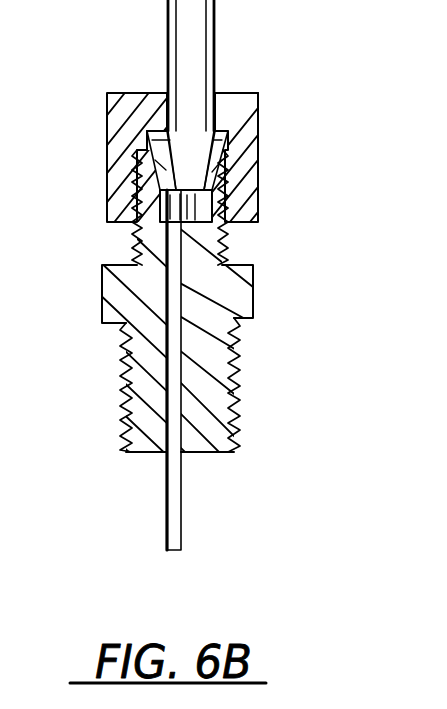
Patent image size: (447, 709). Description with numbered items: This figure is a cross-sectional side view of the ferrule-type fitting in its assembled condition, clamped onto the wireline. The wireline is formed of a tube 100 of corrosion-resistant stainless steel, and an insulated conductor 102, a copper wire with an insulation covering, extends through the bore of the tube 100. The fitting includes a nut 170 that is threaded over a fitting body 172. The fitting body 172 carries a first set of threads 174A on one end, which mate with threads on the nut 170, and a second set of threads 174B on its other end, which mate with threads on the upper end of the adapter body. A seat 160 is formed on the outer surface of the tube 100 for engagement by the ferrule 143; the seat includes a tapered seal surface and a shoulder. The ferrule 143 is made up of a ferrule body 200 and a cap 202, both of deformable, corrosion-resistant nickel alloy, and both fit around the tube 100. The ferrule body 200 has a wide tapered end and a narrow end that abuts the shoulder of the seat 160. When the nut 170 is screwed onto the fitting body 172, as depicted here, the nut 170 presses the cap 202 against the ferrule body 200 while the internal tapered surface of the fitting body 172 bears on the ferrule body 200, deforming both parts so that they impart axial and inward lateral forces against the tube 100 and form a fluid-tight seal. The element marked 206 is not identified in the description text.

The tube 100 is at (213, 47).
The insulated conductor 102 is at (183, 518).
The ferrule 143 is at (138, 166).
The seat 160 is at (222, 195).
The nut 170 is at (258, 118).
The fitting body 172 is at (256, 296).
The first set of threads 174A is at (232, 185).
The second set of threads 174B is at (237, 383).
The ferrule body 200 is at (140, 190).
The cap 202 is at (147, 131).
The nut opening 206 is at (230, 93).